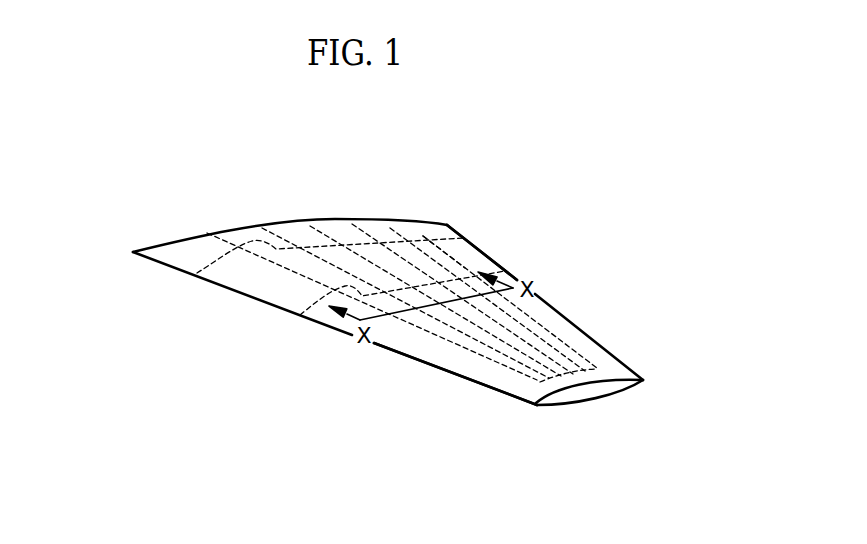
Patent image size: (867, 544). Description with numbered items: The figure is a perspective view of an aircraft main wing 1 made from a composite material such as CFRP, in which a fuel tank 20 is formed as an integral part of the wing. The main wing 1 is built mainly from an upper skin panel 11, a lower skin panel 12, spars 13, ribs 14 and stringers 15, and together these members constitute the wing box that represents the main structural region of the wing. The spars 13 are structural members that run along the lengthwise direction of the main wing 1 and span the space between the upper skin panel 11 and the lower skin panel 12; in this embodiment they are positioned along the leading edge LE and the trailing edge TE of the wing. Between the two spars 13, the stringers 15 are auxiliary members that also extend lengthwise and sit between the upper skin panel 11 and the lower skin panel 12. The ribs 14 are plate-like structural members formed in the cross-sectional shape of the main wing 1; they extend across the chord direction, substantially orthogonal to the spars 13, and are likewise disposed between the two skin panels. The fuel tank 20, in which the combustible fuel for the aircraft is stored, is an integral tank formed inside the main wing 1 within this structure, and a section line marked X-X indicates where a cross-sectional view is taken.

The main wing 1 is at (133, 162).
The upper skin panel 11 is at (606, 375).
The lower skin panel 12 is at (593, 402).
The spars 13 is at (285, 266).
The ribs 14 is at (197, 273).
The stringers 15 is at (280, 237).
The fuel tank 20 is at (424, 242).
The trailing edge TE is at (553, 307).
The leading edge LE is at (490, 386).